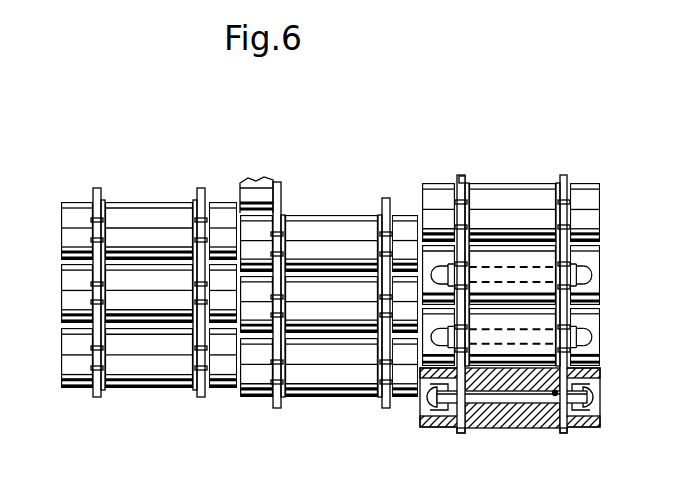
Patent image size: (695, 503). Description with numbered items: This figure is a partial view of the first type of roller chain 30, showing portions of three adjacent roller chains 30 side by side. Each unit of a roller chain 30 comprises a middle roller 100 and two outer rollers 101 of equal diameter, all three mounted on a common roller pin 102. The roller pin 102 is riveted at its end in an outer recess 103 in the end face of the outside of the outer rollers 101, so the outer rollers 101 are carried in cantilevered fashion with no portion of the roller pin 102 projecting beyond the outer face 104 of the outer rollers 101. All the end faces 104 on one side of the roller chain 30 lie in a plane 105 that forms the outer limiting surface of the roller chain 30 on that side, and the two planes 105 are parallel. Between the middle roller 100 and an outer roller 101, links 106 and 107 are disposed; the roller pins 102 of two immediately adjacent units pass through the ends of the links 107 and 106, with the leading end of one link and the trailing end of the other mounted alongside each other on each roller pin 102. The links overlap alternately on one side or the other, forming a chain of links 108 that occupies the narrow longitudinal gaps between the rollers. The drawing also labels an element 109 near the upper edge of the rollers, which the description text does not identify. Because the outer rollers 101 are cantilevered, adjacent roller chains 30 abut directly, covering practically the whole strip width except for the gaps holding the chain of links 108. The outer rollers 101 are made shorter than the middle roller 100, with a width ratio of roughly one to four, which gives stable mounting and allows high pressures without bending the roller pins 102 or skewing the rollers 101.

The roller chain 30 is at (103, 178).
The middle roller 100 is at (130, 298).
The outer roller 101 is at (70, 296).
The roller pin 102 is at (507, 397).
The outer recess 103 is at (425, 412).
The outer face 104 is at (421, 404).
The plane 105 is at (420, 434).
The link 106 is at (466, 178).
The link 107 is at (456, 208).
The chain of links 108 is at (463, 162).
The guide plate 109 is at (238, 184).